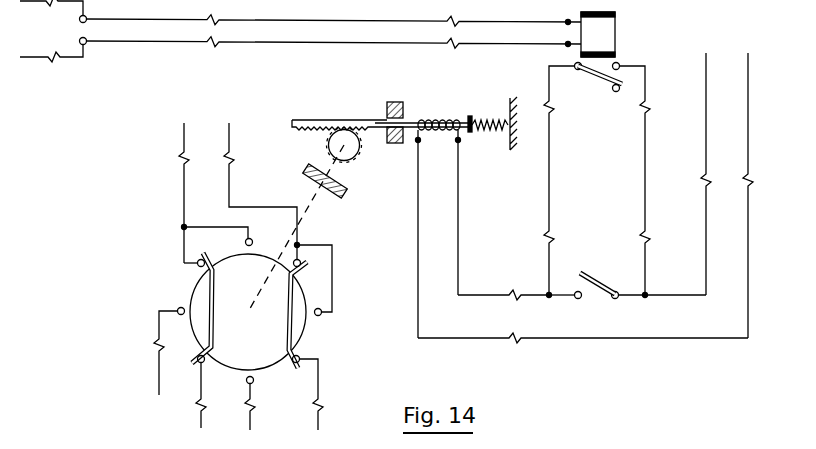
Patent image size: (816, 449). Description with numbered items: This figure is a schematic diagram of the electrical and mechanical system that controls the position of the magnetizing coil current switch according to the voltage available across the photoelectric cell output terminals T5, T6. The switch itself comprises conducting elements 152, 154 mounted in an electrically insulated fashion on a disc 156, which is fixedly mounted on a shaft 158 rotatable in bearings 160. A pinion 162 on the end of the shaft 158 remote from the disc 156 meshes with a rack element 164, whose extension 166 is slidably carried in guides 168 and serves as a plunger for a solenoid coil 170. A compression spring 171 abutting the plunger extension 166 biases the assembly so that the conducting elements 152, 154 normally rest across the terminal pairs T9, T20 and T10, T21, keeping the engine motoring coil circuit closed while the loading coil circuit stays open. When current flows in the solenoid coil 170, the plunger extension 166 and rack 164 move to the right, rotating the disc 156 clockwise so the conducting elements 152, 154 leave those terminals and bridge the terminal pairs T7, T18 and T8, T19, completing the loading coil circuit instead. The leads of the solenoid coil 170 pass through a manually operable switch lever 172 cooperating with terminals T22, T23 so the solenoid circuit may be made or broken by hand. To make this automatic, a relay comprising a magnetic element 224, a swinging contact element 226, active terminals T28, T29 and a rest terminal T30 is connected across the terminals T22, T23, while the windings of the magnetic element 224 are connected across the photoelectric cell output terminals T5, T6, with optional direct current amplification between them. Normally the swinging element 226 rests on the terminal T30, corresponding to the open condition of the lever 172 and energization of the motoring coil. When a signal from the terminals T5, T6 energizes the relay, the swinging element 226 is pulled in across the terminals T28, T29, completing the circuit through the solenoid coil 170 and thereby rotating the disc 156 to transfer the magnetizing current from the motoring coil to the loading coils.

The photoelectric cell output terminal T5 is at (80, 19).
The photoelectric cell output terminal T6 is at (80, 39).
The magnetic element 224 is at (615, 17).
The active terminal T28 is at (577, 70).
The active terminal T29 is at (619, 62).
The rest terminal T30 is at (617, 92).
The swinging contact element 226 is at (597, 86).
The rack element 164 is at (319, 119).
The extension of the rack element 166 is at (387, 116).
The guides 168 is at (403, 104).
The pinion 162 is at (363, 150).
The shaft 158 is at (309, 216).
The bearings 160 is at (345, 185).
The solenoid coil 170 is at (434, 117).
The compression spring 171 is at (492, 132).
The conducting element 152 is at (216, 275).
The conducting element 154 is at (286, 309).
The disc 156 is at (270, 371).
The terminal T19 is at (253, 239).
The terminal T20 is at (301, 263).
The terminal T21 is at (198, 268).
The terminal T18 is at (321, 315).
The terminal T8 is at (179, 309).
The terminal T9 is at (300, 356).
The terminal T10 is at (197, 365).
The terminal T7 is at (247, 381).
The terminal T23 is at (576, 300).
The terminal T22 is at (619, 300).
The magnetizing coil current switching solenoid circuit switch lever 172 is at (600, 277).